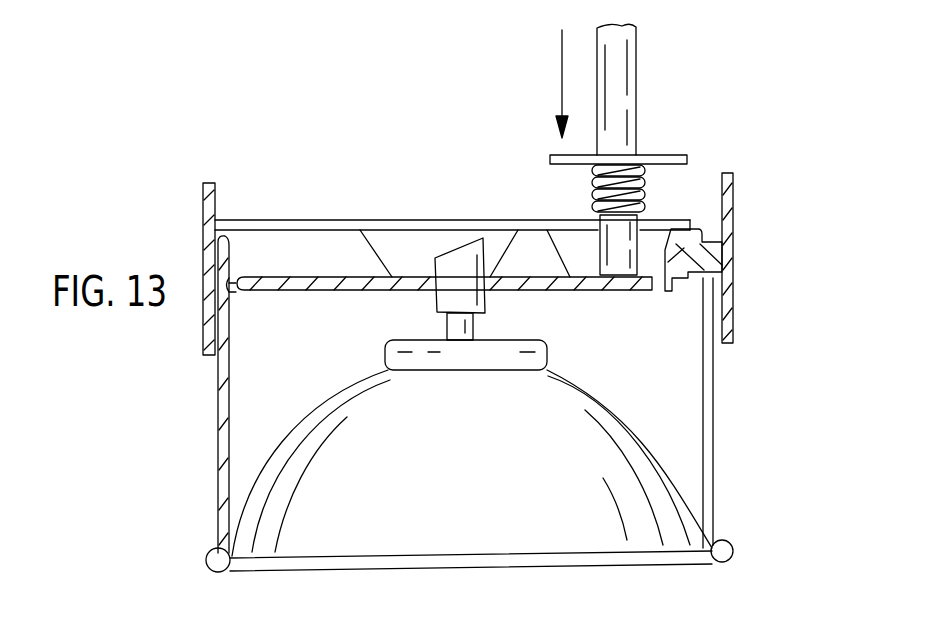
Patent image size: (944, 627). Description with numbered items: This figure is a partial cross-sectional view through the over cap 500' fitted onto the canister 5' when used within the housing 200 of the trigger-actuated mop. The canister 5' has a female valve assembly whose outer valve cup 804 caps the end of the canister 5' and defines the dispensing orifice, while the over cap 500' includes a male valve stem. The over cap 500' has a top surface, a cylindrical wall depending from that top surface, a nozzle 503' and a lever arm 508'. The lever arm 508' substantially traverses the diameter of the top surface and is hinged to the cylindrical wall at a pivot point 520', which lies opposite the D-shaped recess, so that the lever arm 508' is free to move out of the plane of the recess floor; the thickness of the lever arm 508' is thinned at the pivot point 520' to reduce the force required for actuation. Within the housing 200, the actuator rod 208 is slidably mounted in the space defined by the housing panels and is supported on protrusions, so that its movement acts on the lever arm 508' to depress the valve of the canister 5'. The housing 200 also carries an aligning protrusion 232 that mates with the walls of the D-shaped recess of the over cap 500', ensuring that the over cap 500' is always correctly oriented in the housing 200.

The actuator rod 208 is at (617, 62).
The housing 200 is at (742, 201).
The nozzle 503' is at (437, 256).
The pivot point 520' is at (270, 308).
The lever arm 508' is at (444, 304).
The aligning protrusion 232 is at (694, 262).
The outer valve cup 804 is at (533, 364).
The over cap 500' is at (186, 368).
The canister 5' is at (449, 463).